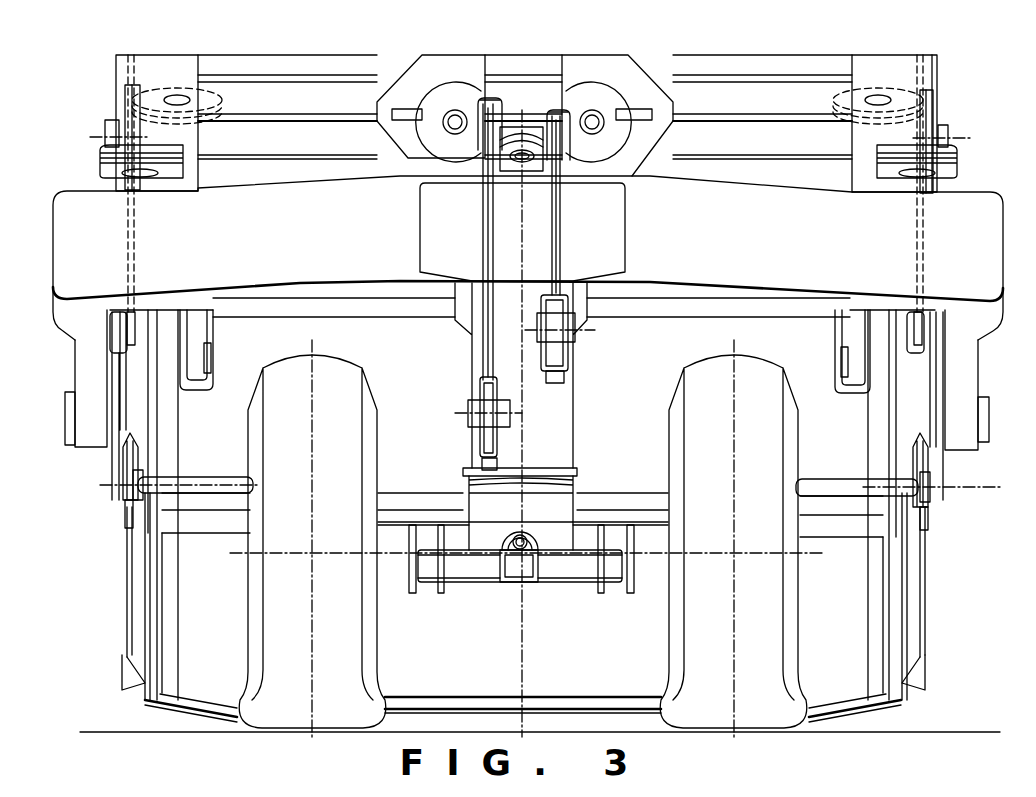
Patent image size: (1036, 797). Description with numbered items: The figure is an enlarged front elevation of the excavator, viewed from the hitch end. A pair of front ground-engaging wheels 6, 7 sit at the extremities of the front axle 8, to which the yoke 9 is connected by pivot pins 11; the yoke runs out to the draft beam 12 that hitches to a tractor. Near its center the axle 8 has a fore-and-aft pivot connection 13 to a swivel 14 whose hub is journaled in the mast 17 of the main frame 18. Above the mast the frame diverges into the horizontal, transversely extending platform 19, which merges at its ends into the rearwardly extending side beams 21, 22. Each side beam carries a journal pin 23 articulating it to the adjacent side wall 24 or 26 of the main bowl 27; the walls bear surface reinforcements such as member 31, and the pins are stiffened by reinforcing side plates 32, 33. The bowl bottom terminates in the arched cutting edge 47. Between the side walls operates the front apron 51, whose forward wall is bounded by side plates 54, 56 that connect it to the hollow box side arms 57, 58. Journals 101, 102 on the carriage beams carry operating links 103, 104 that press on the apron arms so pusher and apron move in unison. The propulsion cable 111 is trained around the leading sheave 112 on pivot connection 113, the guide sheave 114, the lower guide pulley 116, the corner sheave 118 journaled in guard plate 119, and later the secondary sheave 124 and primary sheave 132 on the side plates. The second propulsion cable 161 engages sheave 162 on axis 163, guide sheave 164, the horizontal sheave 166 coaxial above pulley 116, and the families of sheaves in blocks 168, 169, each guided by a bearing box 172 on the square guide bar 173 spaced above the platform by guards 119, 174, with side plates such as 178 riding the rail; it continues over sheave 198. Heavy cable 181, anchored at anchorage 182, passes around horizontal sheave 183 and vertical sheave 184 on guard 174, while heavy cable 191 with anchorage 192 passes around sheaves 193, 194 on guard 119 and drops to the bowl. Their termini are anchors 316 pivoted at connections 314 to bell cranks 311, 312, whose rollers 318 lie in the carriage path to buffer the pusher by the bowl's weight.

The front ground-engaging wheel 6 is at (253, 627).
The front ground-engaging wheel 7 is at (797, 633).
The front axle 8 is at (395, 571).
The yoke 9 is at (470, 578).
The pivot pin 11 is at (428, 570).
The draft beam 12 is at (500, 578).
The fore-and-aft pivot connection 13 is at (528, 530).
The swivel 14 is at (578, 471).
The mast 17 is at (574, 419).
The main frame 18 is at (665, 302).
The platform 19 is at (726, 191).
The frame side beam 21 is at (72, 350).
The frame side beam 22 is at (975, 356).
The journal pin 23 is at (64, 432).
The side wall 24 is at (147, 582).
The side wall 26 is at (905, 610).
The main bowl 27 is at (126, 615).
The added member 31 is at (143, 673).
The reinforcing side plate 32 is at (118, 369).
The reinforcing side plate 33 is at (938, 392).
The cutting edge 47 is at (173, 708).
The front apron 51 is at (862, 701).
The side plate 54 is at (160, 547).
The side plate 56 is at (889, 566).
The side arm 57 is at (176, 438).
The side arm 58 is at (867, 437).
The journal 101 is at (207, 355).
The journal 102 is at (845, 357).
The operating strut or link 103 is at (201, 334).
The operating strut or link 104 is at (850, 333).
The propulsion cable 111 is at (292, 151).
The leading sheave 112 is at (562, 356).
The pivot connection 113 is at (562, 384).
The guide sheave 114 is at (562, 181).
The lower guide pulley 116 is at (528, 172).
The corner sheave 118 is at (171, 179).
The guard plate 119 is at (165, 58).
The secondary sheave 124 is at (109, 325).
The primary sheave 132 is at (925, 327).
The second propulsion cable 161 is at (813, 151).
The sheave 162 is at (484, 441).
The axis 163 is at (498, 464).
The guide sheave 164 is at (482, 181).
The horizontal sheave 166 is at (532, 127).
The block 168 is at (594, 74).
The block 169 is at (458, 77).
The bearing box 172 is at (402, 58).
The square guide bar 173 is at (296, 59).
The companion guard 174 is at (890, 62).
The side plate 178 is at (418, 177).
The heavy cable 181 is at (793, 114).
The anchorage 182 is at (652, 111).
The horizontal sheave 183 is at (886, 98).
The vertical sheave 184 is at (934, 97).
The heavy cable 191 is at (301, 114).
The anchorage 192 is at (402, 118).
The horizontal sheave 193 is at (225, 106).
The vertical sheave 194 is at (124, 91).
The horizontal sheave 198 is at (897, 188).
The bell crank 311 is at (130, 513).
The bell crank 312 is at (926, 520).
The pivot connection 314 is at (136, 483).
The anchor 316 is at (140, 461).
The roller 318 is at (136, 318).